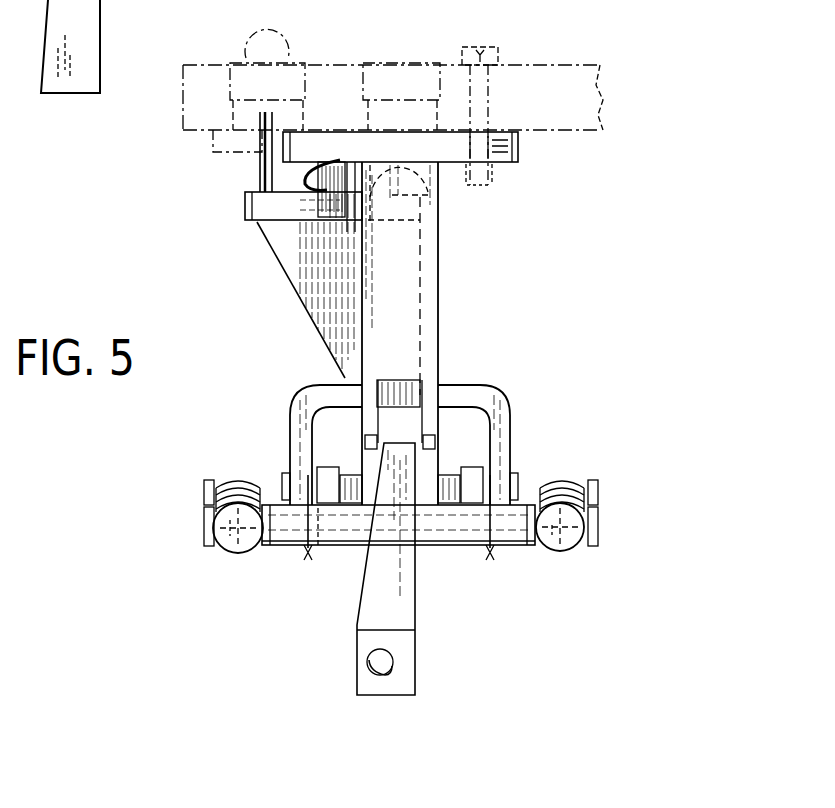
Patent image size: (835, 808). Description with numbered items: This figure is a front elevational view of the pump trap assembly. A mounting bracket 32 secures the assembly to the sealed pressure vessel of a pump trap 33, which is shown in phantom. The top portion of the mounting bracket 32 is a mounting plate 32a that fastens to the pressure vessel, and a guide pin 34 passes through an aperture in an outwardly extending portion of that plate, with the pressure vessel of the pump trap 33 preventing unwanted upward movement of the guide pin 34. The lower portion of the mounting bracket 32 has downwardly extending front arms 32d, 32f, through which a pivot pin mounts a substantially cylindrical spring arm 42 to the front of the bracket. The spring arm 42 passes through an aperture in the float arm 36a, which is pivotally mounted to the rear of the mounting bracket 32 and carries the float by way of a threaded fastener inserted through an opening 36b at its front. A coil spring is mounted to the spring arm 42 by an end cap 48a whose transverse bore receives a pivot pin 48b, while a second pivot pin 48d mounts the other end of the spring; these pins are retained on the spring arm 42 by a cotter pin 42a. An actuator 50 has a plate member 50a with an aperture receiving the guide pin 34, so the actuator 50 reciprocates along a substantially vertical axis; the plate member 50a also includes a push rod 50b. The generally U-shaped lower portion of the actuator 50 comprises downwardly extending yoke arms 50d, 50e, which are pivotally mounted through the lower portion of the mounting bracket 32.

The pump trap 33 is at (545, 105).
The guide pin 34 is at (305, 180).
The mounting bracket 32 is at (462, 296).
The mounting plate 32a is at (512, 163).
The front arm 32d is at (352, 470).
The front arm 32f is at (452, 470).
The actuator 50 is at (262, 281).
The plate member 50a is at (245, 205).
The push rod 50b is at (262, 172).
The yoke arm 50d is at (298, 395).
The yoke arm 50e is at (505, 395).
The spring arm 42 is at (280, 550).
The cotter pin 42a is at (313, 558).
The end cap 48a is at (232, 553).
The pivot pin 48b is at (205, 533).
The pivot pin 48d is at (205, 492).
The float arm 36a is at (405, 605).
The opening 36b is at (408, 667).